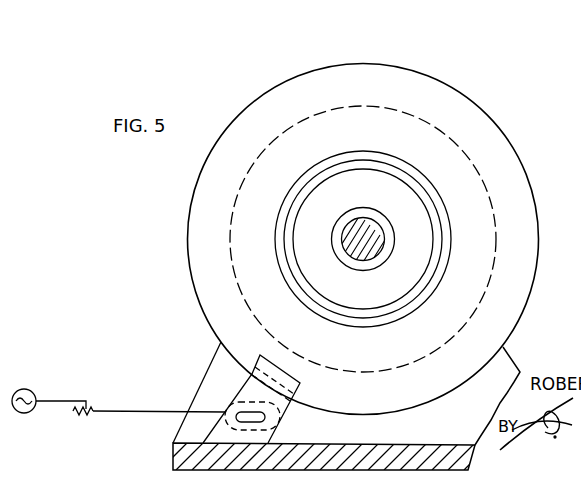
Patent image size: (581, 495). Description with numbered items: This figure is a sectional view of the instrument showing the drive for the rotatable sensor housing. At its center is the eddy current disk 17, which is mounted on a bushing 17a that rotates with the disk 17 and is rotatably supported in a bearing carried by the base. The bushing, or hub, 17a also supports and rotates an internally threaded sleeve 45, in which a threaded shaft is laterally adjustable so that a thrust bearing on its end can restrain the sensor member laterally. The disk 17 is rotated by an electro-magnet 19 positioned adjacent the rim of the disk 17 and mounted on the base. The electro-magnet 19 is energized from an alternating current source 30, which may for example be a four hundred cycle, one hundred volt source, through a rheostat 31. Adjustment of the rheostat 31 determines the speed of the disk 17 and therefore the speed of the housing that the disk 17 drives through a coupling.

The eddy current disk 17 is at (511, 151).
The bushing 17a is at (420, 215).
The internally threaded sleeve 45 is at (360, 262).
The electro-magnet 19 is at (283, 413).
The alternating current source 30 is at (30, 391).
The rheostat 31 is at (85, 414).